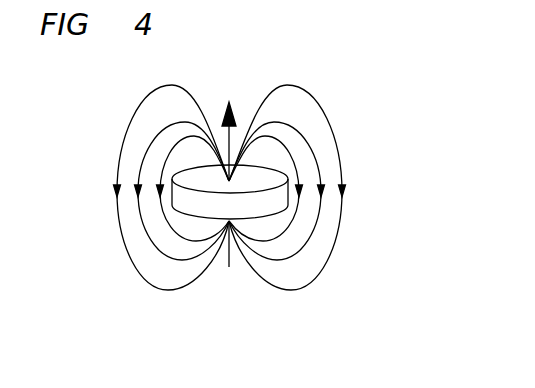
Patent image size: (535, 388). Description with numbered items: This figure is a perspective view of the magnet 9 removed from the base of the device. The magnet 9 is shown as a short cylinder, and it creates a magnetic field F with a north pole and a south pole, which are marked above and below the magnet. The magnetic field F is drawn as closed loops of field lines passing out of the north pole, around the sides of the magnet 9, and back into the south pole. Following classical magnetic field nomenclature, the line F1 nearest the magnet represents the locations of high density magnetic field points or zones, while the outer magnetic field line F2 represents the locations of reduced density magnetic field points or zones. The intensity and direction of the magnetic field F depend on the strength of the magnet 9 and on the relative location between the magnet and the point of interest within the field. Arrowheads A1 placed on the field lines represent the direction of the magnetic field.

The magnet 9 is at (332, 80).
The line F1 is at (298, 167).
The magnetic field F is at (300, 235).
The magnetic field line F2 is at (341, 228).
The arrowhead A1 is at (300, 190).